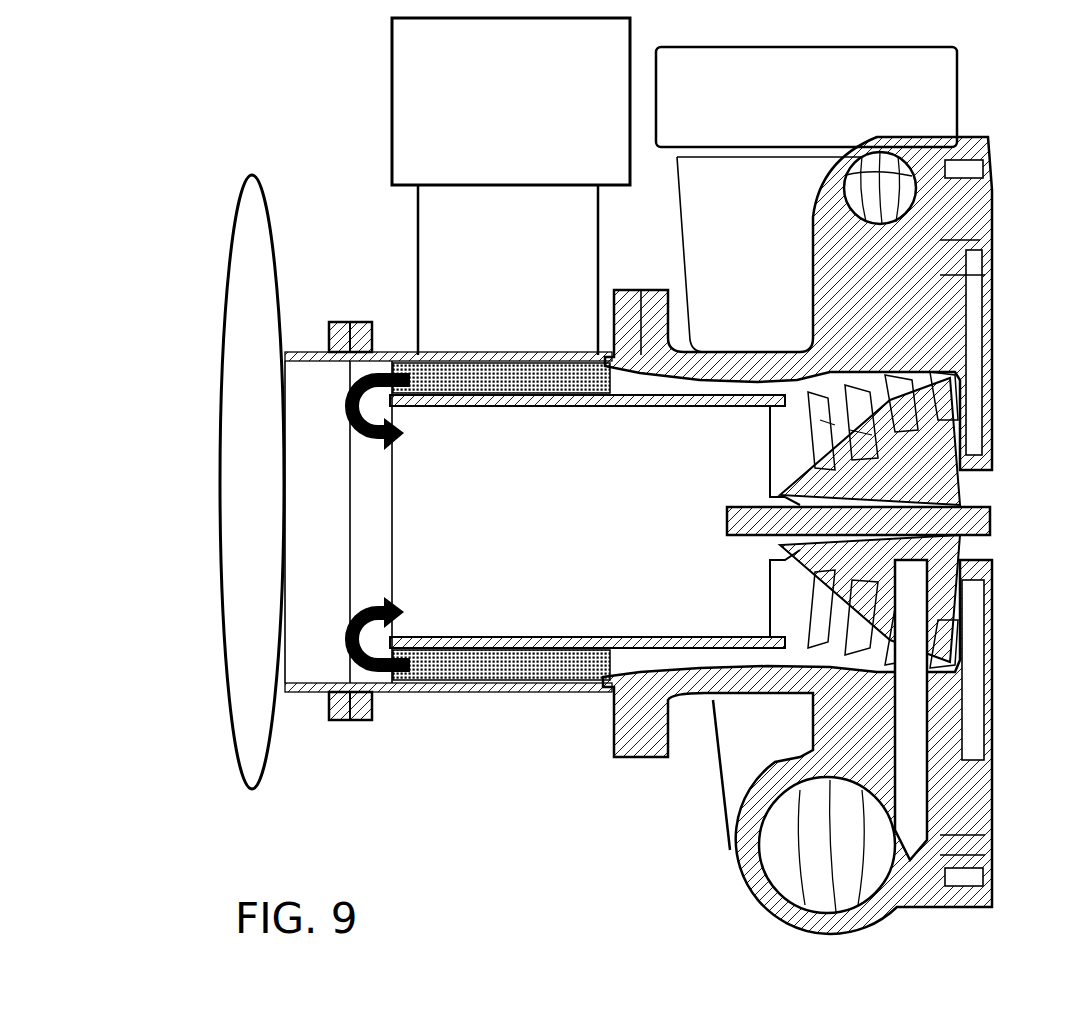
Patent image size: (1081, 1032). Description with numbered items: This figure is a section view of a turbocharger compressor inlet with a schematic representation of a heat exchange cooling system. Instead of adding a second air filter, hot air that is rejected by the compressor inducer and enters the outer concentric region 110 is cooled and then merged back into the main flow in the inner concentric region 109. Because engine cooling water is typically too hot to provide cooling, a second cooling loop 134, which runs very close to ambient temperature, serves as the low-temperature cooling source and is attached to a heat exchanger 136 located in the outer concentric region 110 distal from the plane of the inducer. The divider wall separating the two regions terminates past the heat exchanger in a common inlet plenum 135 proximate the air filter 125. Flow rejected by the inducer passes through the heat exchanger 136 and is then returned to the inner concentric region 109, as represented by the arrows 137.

The first inner region 109 is at (654, 543).
The second inner region 110 is at (712, 385).
The air cleaner 125 is at (243, 512).
The second cooling loop 134 is at (392, 122).
The common inlet plenum 135 is at (336, 543).
The heat exchanger 136 is at (457, 365).
The arrows 137 is at (378, 447).